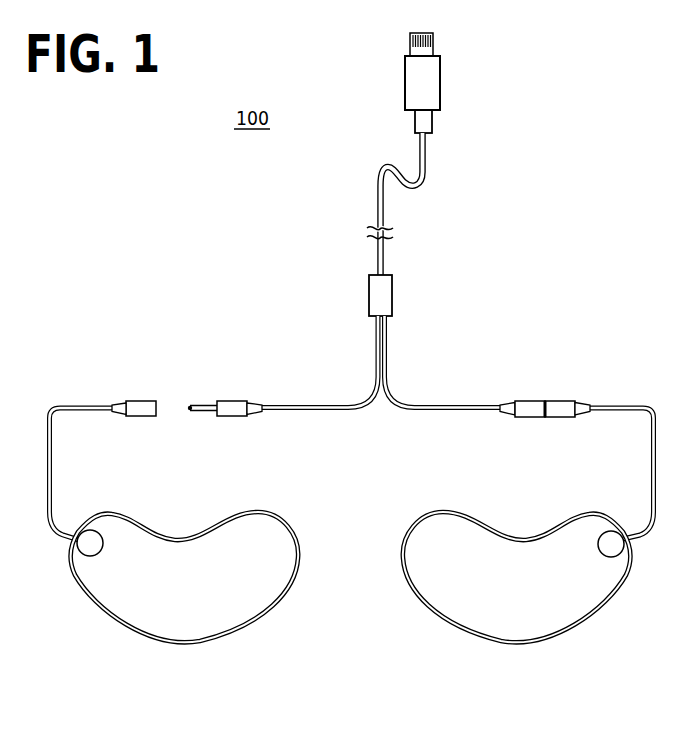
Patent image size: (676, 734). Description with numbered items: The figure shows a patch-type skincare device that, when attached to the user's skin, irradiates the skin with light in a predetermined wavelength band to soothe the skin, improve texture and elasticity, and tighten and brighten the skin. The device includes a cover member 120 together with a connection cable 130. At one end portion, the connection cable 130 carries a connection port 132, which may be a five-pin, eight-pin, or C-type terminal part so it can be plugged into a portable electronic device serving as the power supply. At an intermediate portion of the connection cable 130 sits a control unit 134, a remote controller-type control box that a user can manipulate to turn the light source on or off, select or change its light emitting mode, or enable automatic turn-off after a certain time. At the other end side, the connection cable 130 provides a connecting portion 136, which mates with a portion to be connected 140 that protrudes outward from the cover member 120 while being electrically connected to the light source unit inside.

The cover member 120 is at (152, 615).
The connection cable 130 is at (399, 215).
The connection port 132 is at (440, 81).
The control unit 134 is at (390, 298).
The connecting portion 136 is at (228, 400).
The portion to be connected 140 is at (140, 400).